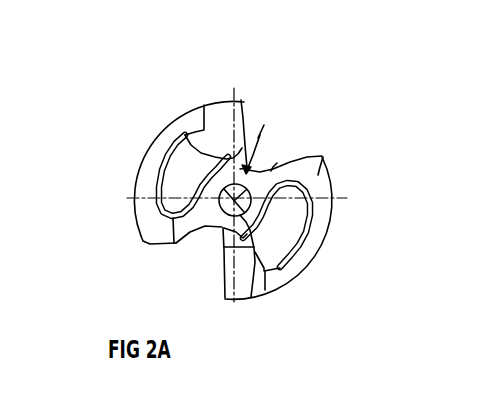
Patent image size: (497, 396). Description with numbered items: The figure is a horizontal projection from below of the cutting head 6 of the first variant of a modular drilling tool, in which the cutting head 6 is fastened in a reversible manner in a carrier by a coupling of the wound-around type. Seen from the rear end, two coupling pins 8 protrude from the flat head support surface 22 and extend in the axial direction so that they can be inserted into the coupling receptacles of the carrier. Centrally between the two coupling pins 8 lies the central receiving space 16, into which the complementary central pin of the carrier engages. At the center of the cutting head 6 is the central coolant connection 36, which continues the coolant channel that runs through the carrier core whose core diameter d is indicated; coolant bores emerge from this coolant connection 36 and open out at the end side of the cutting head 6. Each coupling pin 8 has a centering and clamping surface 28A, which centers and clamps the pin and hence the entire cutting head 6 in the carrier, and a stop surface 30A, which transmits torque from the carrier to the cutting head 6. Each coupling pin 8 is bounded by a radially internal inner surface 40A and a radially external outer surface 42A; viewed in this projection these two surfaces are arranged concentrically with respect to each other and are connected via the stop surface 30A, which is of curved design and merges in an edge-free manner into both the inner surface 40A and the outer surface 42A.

The cutting head 6 is at (400, 212).
The coupling pin 8 is at (232, 191).
The central receiving space 16 is at (343, 127).
The head support surface 22 is at (333, 194).
The centering and clamping surface 28A is at (137, 175).
The stop surface 30A is at (217, 234).
The central coolant connection 36 is at (255, 303).
The inner surface 40A is at (278, 98).
The outer surface 42A is at (203, 100).
The core diameter d is at (294, 121).